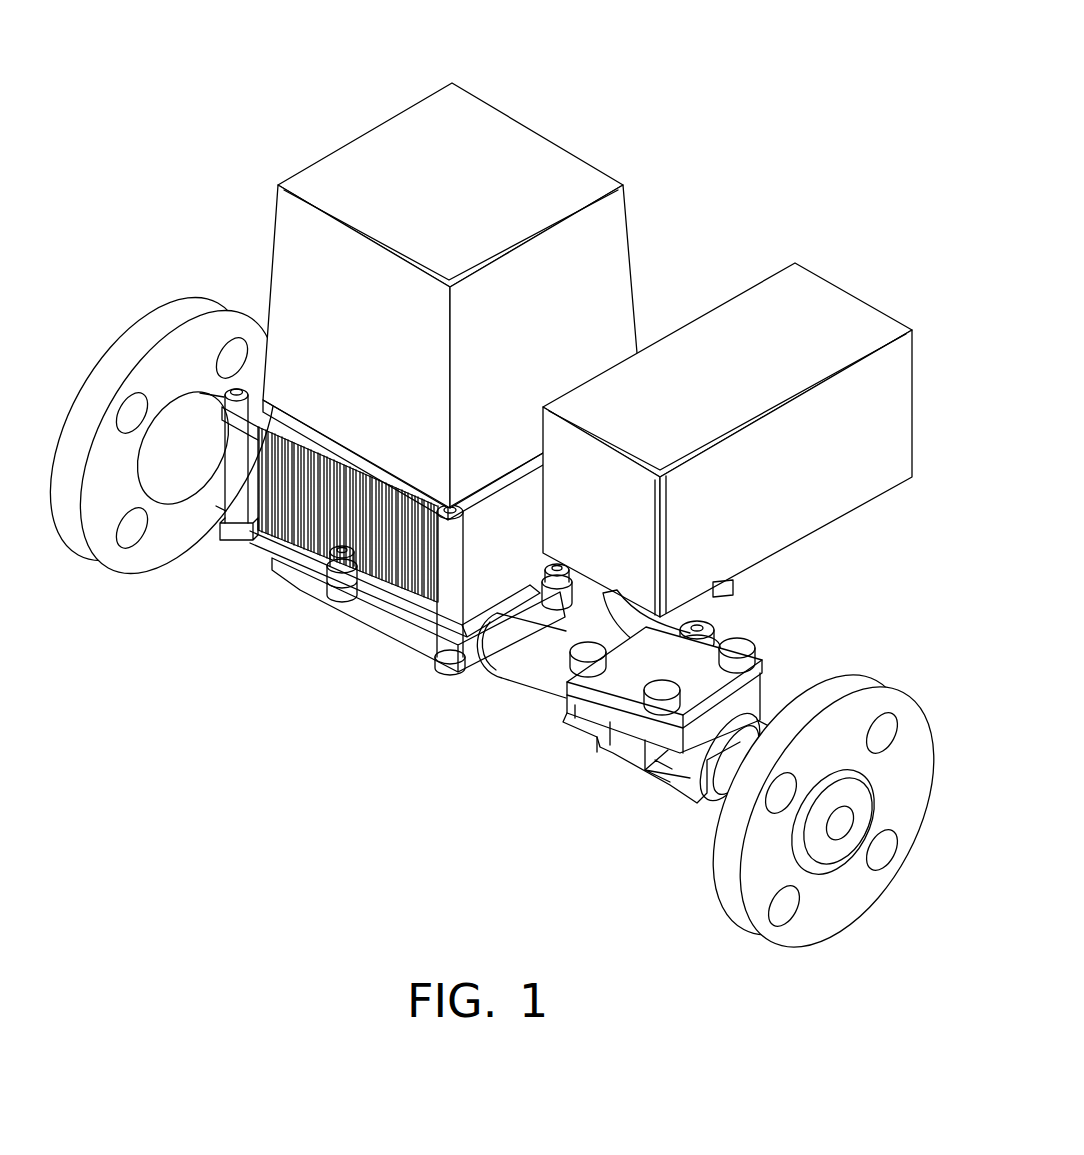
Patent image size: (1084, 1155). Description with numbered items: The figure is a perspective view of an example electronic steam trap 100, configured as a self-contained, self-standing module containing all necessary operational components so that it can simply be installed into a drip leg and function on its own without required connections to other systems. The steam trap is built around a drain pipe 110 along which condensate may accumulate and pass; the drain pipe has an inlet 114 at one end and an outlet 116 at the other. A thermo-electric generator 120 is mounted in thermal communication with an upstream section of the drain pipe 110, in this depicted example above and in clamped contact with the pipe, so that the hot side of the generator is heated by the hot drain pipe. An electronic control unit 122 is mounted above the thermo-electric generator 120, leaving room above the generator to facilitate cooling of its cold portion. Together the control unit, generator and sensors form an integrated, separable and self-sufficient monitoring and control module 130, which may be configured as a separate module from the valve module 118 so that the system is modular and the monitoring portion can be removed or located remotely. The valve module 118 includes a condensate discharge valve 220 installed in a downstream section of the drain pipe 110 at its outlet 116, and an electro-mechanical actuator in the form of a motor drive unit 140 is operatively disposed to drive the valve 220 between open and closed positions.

The electronic steam trap 100 is at (492, 516).
The drain pipe 110 is at (540, 665).
The inlet 114 is at (98, 294).
The outlet 116 is at (855, 806).
The valve module 118 is at (585, 773).
The thermo-electric generator 120 is at (303, 498).
The electronic control unit 122 is at (350, 162).
The monitoring and control module 130 is at (303, 649).
The motor drive unit 140 is at (895, 376).
The condensate discharge valve 220 is at (660, 747).